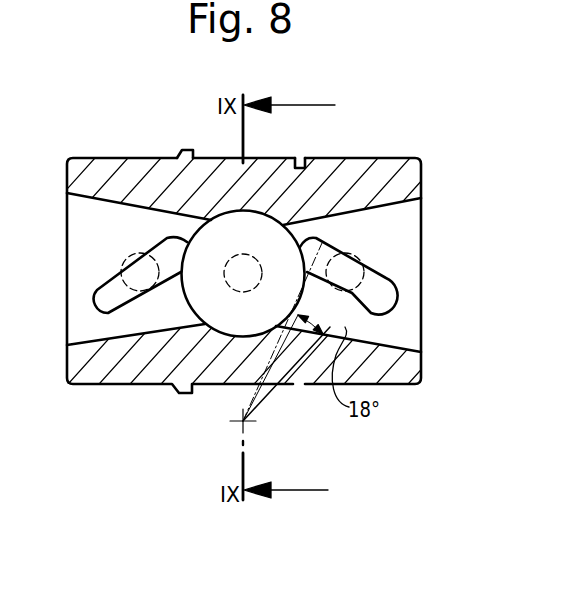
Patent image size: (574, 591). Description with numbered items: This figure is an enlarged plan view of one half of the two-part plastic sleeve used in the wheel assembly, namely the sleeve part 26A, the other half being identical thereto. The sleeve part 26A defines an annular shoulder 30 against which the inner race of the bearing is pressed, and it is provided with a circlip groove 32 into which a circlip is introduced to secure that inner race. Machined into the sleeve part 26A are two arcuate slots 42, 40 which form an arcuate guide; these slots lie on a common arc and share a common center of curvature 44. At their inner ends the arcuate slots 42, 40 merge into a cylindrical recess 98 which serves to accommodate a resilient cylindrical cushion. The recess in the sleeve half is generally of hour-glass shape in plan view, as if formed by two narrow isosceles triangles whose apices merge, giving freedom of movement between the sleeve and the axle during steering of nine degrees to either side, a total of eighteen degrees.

The sleeve part 26A is at (399, 187).
The annular shoulder 30 is at (186, 151).
The circlip groove 32 is at (304, 158).
The cylindrical recess 98 is at (259, 213).
The arcuate slot 40 is at (107, 291).
The arcuate slot 42 is at (387, 297).
The common center of curvature 44 is at (248, 426).